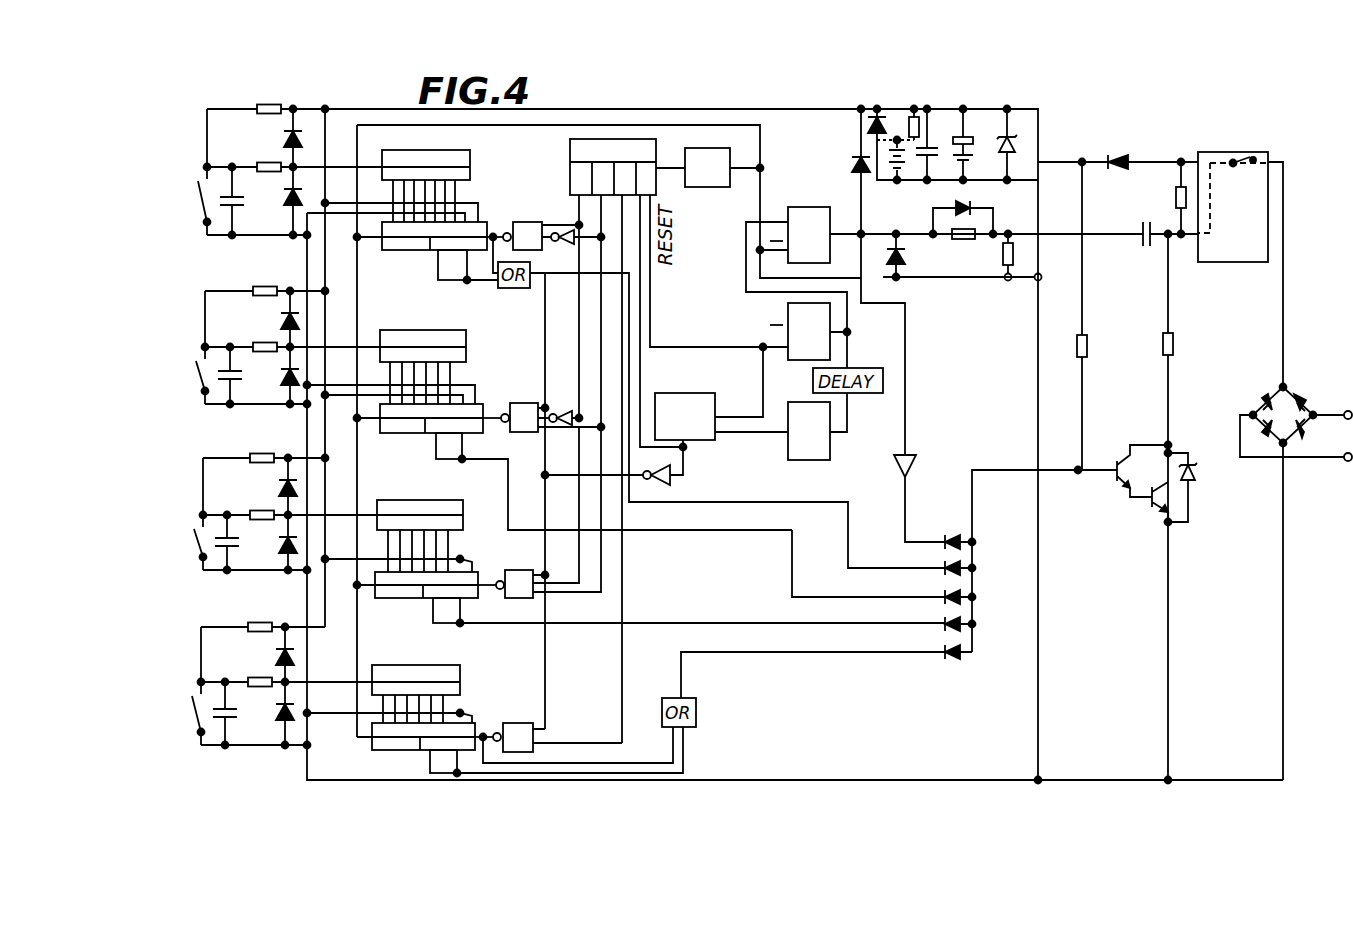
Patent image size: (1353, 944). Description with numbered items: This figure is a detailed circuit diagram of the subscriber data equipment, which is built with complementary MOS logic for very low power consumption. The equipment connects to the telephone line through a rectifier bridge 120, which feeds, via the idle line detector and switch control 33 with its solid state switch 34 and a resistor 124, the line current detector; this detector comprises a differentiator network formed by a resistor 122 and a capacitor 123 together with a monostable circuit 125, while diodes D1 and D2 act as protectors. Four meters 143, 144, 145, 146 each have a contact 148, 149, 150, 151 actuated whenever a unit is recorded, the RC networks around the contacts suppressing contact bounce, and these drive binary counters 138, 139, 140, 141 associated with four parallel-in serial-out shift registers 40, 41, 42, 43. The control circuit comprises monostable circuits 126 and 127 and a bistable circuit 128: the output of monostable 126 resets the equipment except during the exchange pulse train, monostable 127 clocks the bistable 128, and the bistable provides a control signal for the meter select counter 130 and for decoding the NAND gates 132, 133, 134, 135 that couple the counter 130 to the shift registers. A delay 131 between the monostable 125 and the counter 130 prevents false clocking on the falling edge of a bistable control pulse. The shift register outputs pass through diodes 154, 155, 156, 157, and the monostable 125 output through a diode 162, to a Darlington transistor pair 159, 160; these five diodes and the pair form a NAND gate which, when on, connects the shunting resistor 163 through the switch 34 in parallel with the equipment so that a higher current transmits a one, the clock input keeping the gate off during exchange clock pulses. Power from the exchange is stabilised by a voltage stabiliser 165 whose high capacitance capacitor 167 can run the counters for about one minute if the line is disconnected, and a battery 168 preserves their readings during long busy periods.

The idle line detector and switch control 33 is at (1232, 262).
The solid state switch 34 is at (1245, 152).
The shift register 40 is at (400, 251).
The shift register 41 is at (393, 434).
The shift register 42 is at (395, 599).
The shift register 43 is at (392, 751).
The rectifier bridge 120 is at (1262, 389).
The resistor 122 is at (1003, 256).
The capacitor 123 is at (1141, 240).
The resistor 124 is at (1176, 198).
The monostable circuit 125 is at (810, 207).
The monostable circuit 126 is at (788, 310).
The monostable circuit 127 is at (812, 461).
The bistable circuit 128 is at (683, 393).
The meter select counter 130 is at (628, 139).
The delay 131 is at (705, 188).
The NAND gate 132 is at (522, 222).
The NAND gate 133 is at (521, 403).
The NAND gate 134 is at (539, 512).
The NAND gate 135 is at (519, 723).
The binary counter 138 is at (462, 150).
The binary counter 139 is at (439, 330).
The binary counter 140 is at (440, 500).
The binary counter 141 is at (431, 665).
The meter 143 is at (262, 156).
The meter 144 is at (256, 333).
The meter 145 is at (251, 500).
The meter 146 is at (250, 665).
The meter contact 148 is at (205, 204).
The meter contact 149 is at (202, 384).
The meter contact 150 is at (200, 556).
The meter contact 151 is at (198, 708).
The diode 154 is at (948, 578).
The diode 155 is at (948, 606).
The diode 156 is at (948, 633).
The diode 157 is at (952, 664).
The Darlington transistor 159 is at (1120, 477).
The Darlington transistor 160 is at (1156, 504).
The diode 162 is at (949, 531).
The shunting resistor 163 is at (1176, 345).
The voltage stabiliser 165 is at (983, 107).
The high capacitance capacitor 167 is at (975, 142).
The battery 168 is at (896, 137).
The diode D1 is at (853, 160).
The diode D2 is at (889, 256).